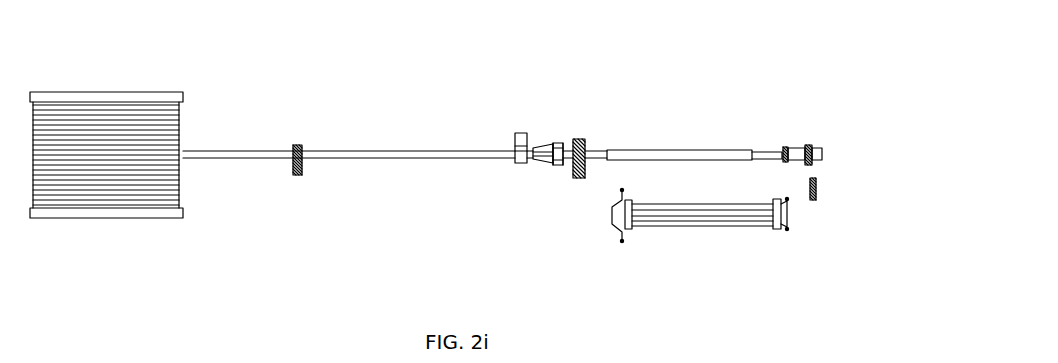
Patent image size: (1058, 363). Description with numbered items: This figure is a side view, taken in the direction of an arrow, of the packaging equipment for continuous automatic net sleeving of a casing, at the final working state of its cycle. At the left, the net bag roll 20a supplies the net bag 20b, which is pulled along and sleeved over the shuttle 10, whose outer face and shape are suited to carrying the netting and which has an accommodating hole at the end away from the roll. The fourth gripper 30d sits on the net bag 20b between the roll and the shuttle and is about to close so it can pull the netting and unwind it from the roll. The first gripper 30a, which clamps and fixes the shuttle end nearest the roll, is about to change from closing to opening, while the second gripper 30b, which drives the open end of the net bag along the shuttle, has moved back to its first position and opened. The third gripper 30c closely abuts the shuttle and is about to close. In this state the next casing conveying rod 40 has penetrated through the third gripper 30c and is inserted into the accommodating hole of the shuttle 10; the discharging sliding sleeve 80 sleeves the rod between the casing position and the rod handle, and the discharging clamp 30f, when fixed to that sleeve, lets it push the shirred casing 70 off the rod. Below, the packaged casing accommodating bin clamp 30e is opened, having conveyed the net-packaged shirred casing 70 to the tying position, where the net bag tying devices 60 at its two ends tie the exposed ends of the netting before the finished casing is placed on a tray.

The net bag roll 20a is at (102, 117).
The net bag 20b is at (537, 163).
The shuttle 10 is at (561, 166).
The first gripper 30a is at (517, 131).
The second gripper 30b is at (556, 142).
The third gripper 30c is at (580, 139).
The fourth gripper 30d is at (295, 148).
The packaged casing accommodating bin clamp 30e is at (690, 226).
The discharging clamp 30f is at (814, 200).
The casing conveying rod 40 is at (822, 160).
The net bag tying device 60 is at (615, 202).
The shirred casing 70 is at (627, 150).
The discharging sliding sleeve 80 is at (795, 148).